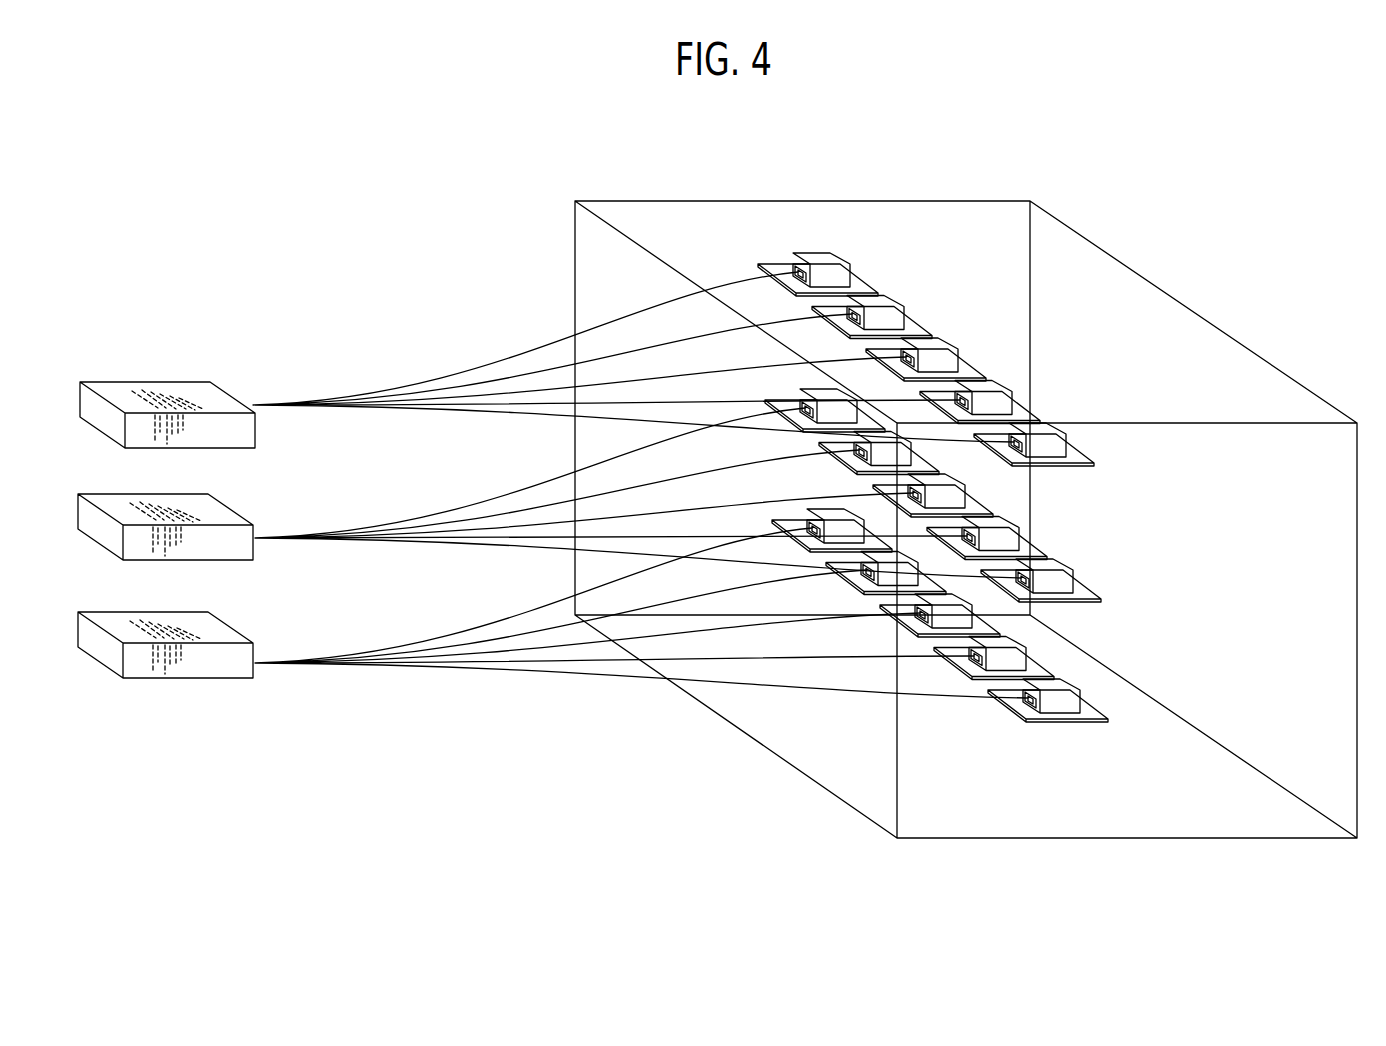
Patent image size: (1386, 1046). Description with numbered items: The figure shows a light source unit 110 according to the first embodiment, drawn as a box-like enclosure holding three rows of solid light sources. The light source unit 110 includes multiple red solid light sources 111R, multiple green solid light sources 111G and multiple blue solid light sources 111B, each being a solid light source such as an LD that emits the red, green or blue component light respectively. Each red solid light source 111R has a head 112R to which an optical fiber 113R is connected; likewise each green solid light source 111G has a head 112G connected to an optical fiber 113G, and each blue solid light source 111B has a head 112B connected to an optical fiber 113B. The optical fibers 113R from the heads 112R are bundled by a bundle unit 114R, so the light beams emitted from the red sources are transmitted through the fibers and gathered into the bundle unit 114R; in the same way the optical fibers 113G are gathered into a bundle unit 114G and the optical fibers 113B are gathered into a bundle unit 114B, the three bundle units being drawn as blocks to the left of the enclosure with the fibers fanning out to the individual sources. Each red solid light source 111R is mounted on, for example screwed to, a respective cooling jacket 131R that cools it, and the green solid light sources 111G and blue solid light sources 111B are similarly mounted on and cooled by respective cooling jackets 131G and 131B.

The light source unit 110 is at (1294, 379).
The red solid light source 111R is at (818, 253).
The green solid light source 111G is at (1012, 514).
The blue solid light source 111B is at (1062, 678).
The head 112R is at (792, 268).
The head 112G is at (980, 503).
The head 112B is at (1032, 699).
The optical fiber 113R is at (345, 424).
The optical fiber 113G is at (351, 558).
The optical fiber 113B is at (360, 684).
The bundle unit 114R is at (169, 388).
The bundle unit 114G is at (240, 483).
The bundle unit 114B is at (240, 606).
The cooling jacket 131R is at (888, 260).
The cooling jacket 131G is at (1040, 541).
The cooling jacket 131B is at (1090, 706).